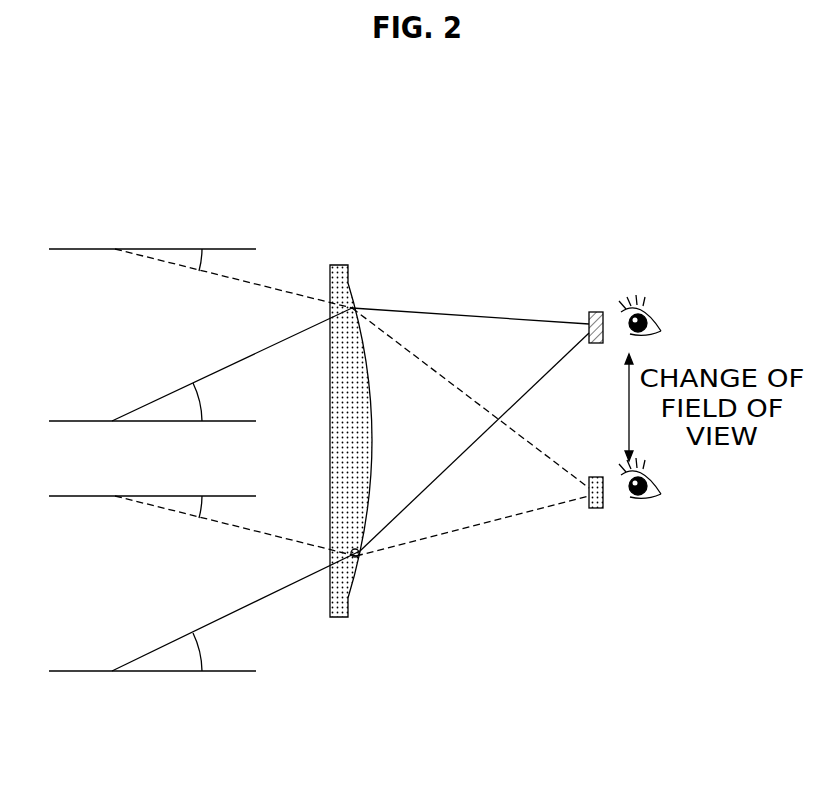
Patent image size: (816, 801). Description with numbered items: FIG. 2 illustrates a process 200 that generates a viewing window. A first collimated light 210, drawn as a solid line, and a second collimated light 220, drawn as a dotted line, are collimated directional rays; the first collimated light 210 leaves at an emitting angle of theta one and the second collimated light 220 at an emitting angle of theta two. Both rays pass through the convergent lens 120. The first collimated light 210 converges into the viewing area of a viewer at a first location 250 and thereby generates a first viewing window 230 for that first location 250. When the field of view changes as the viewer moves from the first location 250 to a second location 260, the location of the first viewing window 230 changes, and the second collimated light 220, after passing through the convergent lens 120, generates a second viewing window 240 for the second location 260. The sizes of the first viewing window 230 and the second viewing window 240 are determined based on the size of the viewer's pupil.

The process that generates a viewing window 200 is at (384, 132).
The convergent lens 120 is at (336, 262).
The first collimated light 210 is at (228, 365).
The second collimated light 220 is at (173, 265).
The first viewing window 230 is at (592, 307).
The second viewing window 240 is at (592, 511).
The first location 250 is at (657, 316).
The second location 260 is at (657, 479).